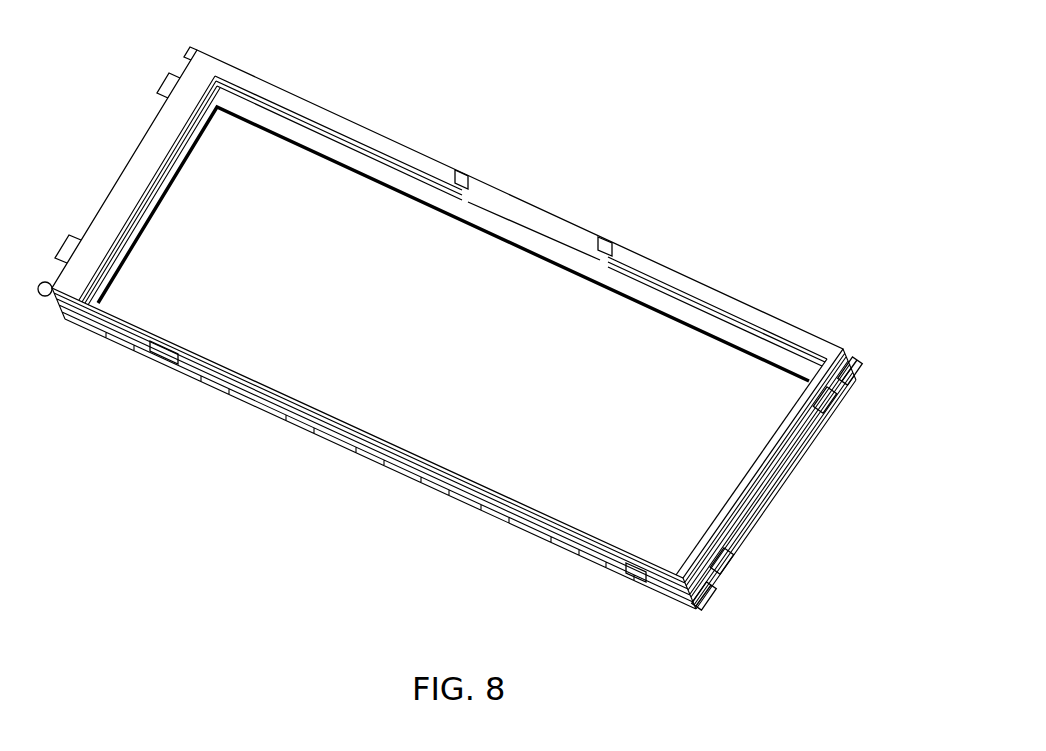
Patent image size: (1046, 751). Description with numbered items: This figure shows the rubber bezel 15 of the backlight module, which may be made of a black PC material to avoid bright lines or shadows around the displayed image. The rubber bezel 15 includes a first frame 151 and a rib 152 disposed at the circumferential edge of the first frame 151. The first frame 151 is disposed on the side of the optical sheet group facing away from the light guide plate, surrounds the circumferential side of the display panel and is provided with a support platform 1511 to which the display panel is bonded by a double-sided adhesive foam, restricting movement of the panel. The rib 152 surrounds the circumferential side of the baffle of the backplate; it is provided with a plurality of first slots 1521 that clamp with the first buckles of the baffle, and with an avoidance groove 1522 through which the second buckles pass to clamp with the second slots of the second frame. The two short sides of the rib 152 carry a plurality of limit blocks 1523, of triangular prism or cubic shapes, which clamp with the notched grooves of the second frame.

The rubber bezel 15 is at (447, 312).
The first frame 151 is at (669, 280).
The support platform 1511 is at (723, 335).
The rib 152 is at (454, 469).
The first slots 1521 is at (640, 587).
The avoidance groove 1522 is at (163, 357).
The limit blocks 1523 is at (820, 412).